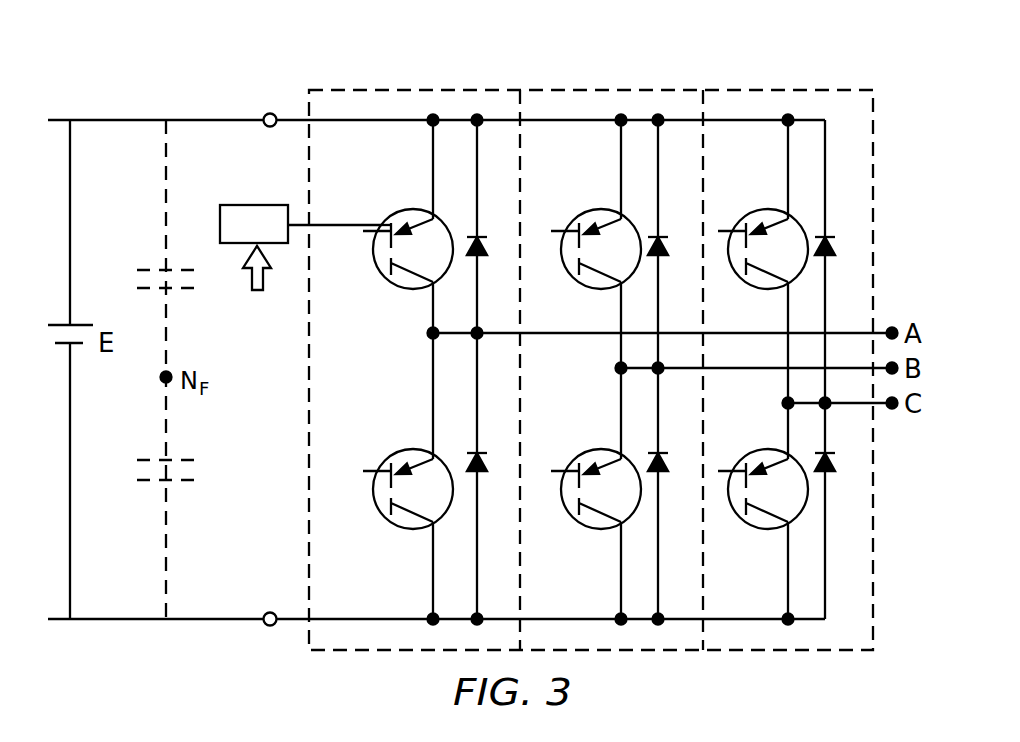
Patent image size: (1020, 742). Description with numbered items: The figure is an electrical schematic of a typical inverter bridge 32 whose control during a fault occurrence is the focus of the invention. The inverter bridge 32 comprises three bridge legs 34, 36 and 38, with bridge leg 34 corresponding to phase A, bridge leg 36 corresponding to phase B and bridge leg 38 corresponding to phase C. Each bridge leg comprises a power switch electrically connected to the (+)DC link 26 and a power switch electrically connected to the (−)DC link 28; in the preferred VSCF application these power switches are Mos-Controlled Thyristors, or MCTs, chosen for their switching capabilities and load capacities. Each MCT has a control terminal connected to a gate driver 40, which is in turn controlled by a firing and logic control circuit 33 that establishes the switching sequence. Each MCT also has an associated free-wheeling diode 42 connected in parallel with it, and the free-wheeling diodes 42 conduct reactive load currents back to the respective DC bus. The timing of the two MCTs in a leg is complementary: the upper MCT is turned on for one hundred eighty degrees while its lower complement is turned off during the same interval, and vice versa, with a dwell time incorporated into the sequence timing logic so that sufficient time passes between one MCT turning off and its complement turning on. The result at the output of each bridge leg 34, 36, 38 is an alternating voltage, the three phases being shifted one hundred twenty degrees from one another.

The (+)DC link 26 is at (293, 118).
The (−)DC link 28 is at (293, 617).
The inverter bridge 32 is at (474, 28).
The firing and logic control circuit 33 is at (257, 286).
The bridge leg 34 is at (385, 90).
The bridge leg 36 is at (586, 90).
The bridge leg 38 is at (775, 90).
The gate driver 40 is at (253, 205).
The free-wheeling diode 42 is at (488, 247).